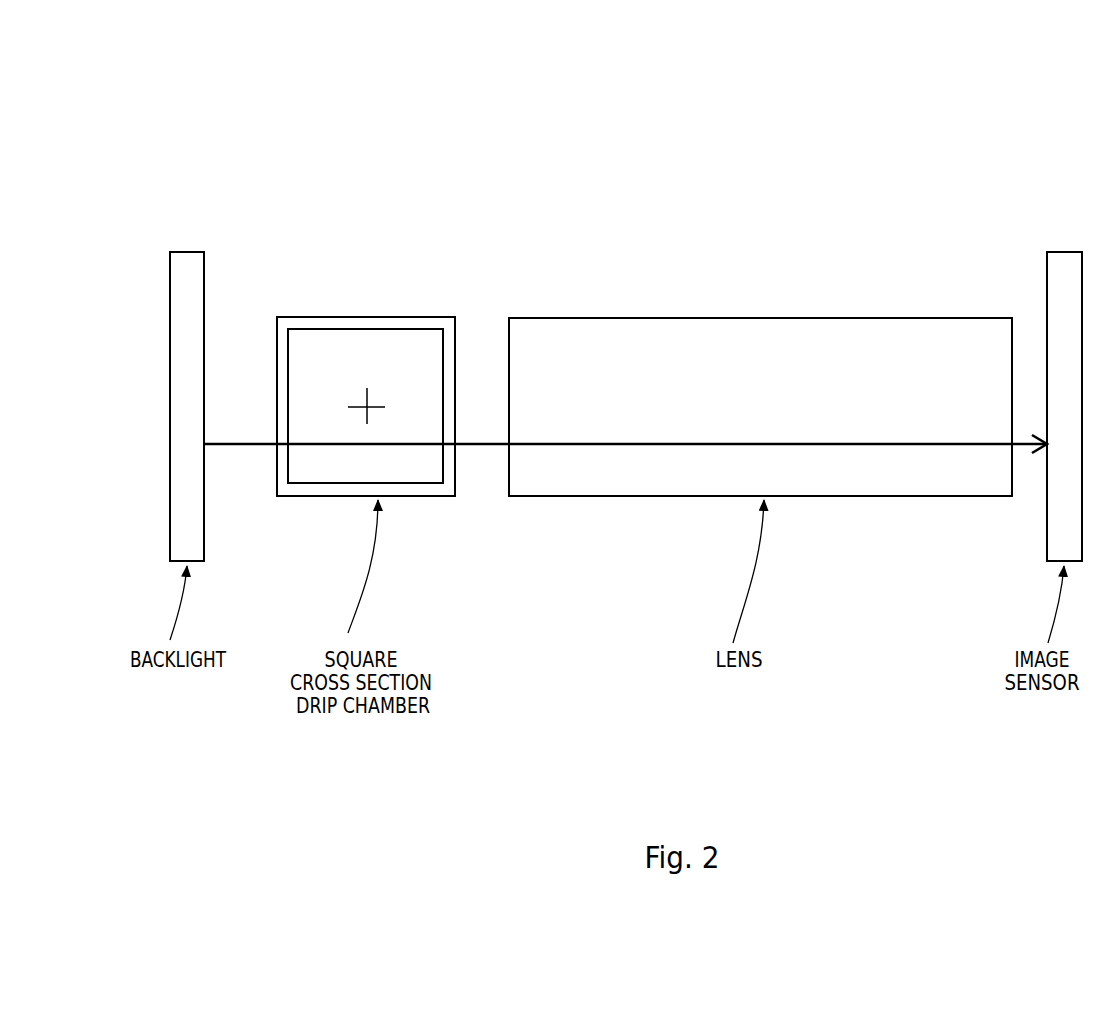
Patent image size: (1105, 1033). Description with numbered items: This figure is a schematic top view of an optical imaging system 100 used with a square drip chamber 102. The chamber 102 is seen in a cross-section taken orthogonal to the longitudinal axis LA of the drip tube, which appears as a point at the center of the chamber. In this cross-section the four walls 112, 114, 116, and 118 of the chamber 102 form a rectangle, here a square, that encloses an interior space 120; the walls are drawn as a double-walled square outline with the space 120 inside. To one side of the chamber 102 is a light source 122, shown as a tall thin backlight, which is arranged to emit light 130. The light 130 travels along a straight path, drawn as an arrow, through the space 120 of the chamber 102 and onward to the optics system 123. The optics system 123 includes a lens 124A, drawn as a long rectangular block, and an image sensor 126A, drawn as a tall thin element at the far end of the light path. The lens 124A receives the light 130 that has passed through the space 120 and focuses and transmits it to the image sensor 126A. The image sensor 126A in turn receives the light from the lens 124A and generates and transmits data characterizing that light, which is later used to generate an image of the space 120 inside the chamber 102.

The optical imaging system 100 is at (955, 80).
The square drip chamber 102 is at (407, 313).
The wall 112 is at (277, 387).
The wall 114 is at (357, 317).
The wall 116 is at (455, 387).
The wall 118 is at (413, 497).
The space 120 is at (318, 370).
The light source 122 is at (170, 502).
The optics system 123 is at (838, 296).
The lens 124A is at (730, 318).
The image sensor 126A is at (1063, 252).
The light 130 is at (468, 447).
The longitudinal axis LA is at (367, 407).